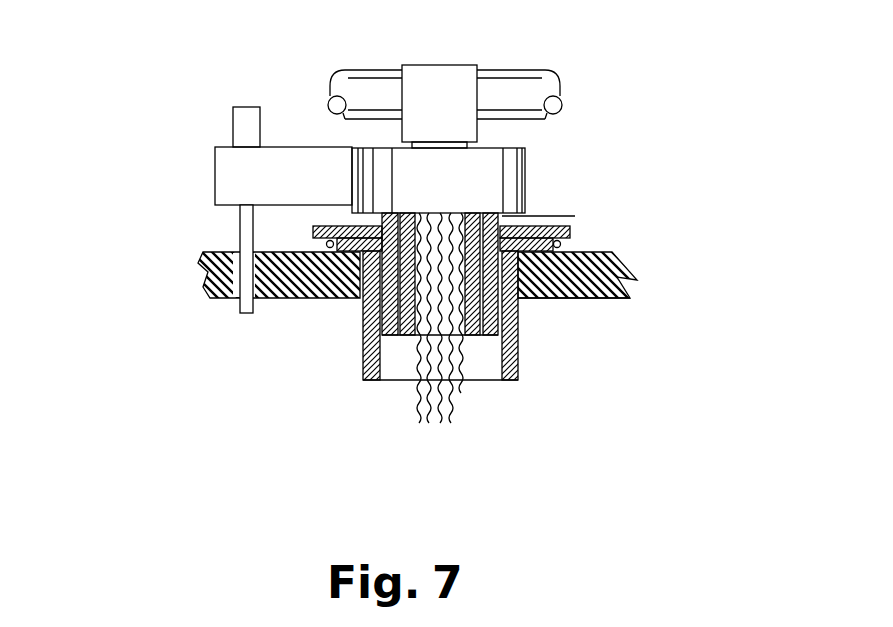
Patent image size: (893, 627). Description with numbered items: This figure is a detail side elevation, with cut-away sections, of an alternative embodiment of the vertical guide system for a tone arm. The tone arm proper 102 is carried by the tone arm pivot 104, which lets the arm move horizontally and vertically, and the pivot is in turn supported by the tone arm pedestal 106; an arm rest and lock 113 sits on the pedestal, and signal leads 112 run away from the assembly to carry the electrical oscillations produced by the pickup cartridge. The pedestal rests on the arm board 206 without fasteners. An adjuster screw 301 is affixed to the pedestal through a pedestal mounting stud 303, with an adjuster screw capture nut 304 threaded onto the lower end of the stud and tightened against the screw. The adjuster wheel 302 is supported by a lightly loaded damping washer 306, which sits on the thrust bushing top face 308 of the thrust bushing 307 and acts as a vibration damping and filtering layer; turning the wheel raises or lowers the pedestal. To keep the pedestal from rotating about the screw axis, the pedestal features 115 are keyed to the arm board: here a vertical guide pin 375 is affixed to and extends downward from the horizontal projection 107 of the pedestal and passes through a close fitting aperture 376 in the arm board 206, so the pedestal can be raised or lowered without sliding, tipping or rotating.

The tone arm proper 102 is at (362, 70).
The tone arm pivot 104 is at (465, 77).
The tone arm pedestal 106 is at (525, 187).
The horizontal projection 107 is at (346, 147).
The signal leads 112 is at (475, 455).
The arm rest and lock 113 is at (264, 123).
The pedestal features 115 is at (190, 144).
The arm board 206 is at (622, 268).
The adjuster screw 301 is at (575, 216).
The adjuster wheel 302 is at (570, 233).
The pedestal mounting stud 303 is at (428, 308).
The adjuster screw capture nut 304 is at (485, 337).
The damping washer 306 is at (567, 243).
The thrust bushing 307 is at (518, 370).
The thrust bushing top face 308 is at (560, 302).
The vertical guide pin 375 is at (238, 232).
The close fitting aperture 376 is at (207, 268).